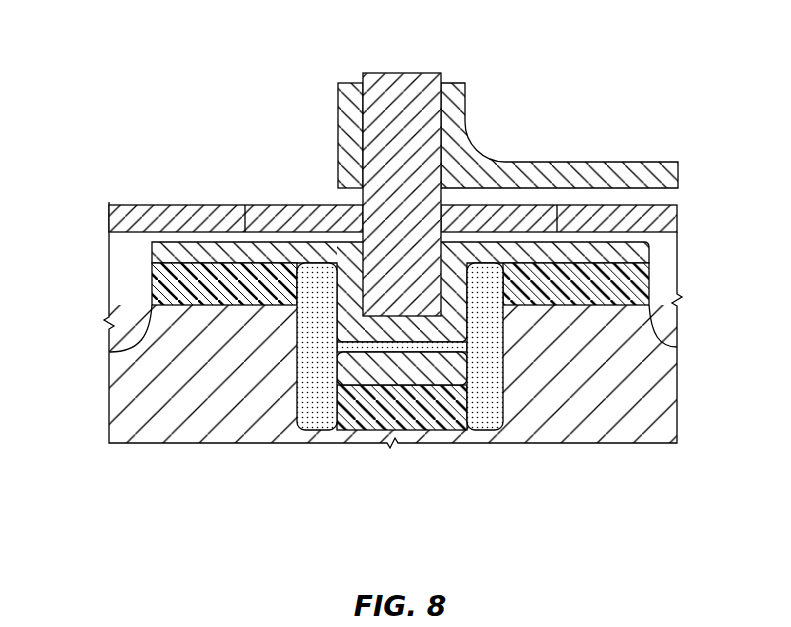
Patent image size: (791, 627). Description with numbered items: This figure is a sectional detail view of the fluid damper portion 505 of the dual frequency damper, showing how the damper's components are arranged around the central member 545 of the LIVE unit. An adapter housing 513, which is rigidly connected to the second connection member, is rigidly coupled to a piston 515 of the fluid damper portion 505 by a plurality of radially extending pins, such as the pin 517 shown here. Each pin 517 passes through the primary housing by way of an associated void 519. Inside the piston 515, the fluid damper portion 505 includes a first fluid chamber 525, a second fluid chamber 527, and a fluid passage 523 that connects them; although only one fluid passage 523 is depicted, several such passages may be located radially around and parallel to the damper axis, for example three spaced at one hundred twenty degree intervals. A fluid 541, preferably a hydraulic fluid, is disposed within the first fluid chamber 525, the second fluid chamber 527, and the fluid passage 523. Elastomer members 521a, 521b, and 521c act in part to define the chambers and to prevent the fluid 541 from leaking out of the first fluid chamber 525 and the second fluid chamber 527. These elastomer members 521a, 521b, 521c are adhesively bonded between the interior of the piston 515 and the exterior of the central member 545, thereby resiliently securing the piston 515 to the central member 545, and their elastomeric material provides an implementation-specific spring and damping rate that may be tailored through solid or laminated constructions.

The fluid damper portion 505 is at (547, 383).
The adapter housing 513 is at (540, 162).
The piston 515 is at (580, 243).
The pin 517 is at (407, 73).
The void 519 is at (318, 217).
The elastomer member 521a is at (152, 295).
The elastomer member 521b is at (438, 420).
The elastomer member 521c is at (650, 282).
The fluid passage 523 is at (383, 347).
The first fluid chamber 525 is at (317, 325).
The second fluid chamber 527 is at (497, 400).
The fluid 541 is at (480, 418).
The central member 545 is at (160, 408).